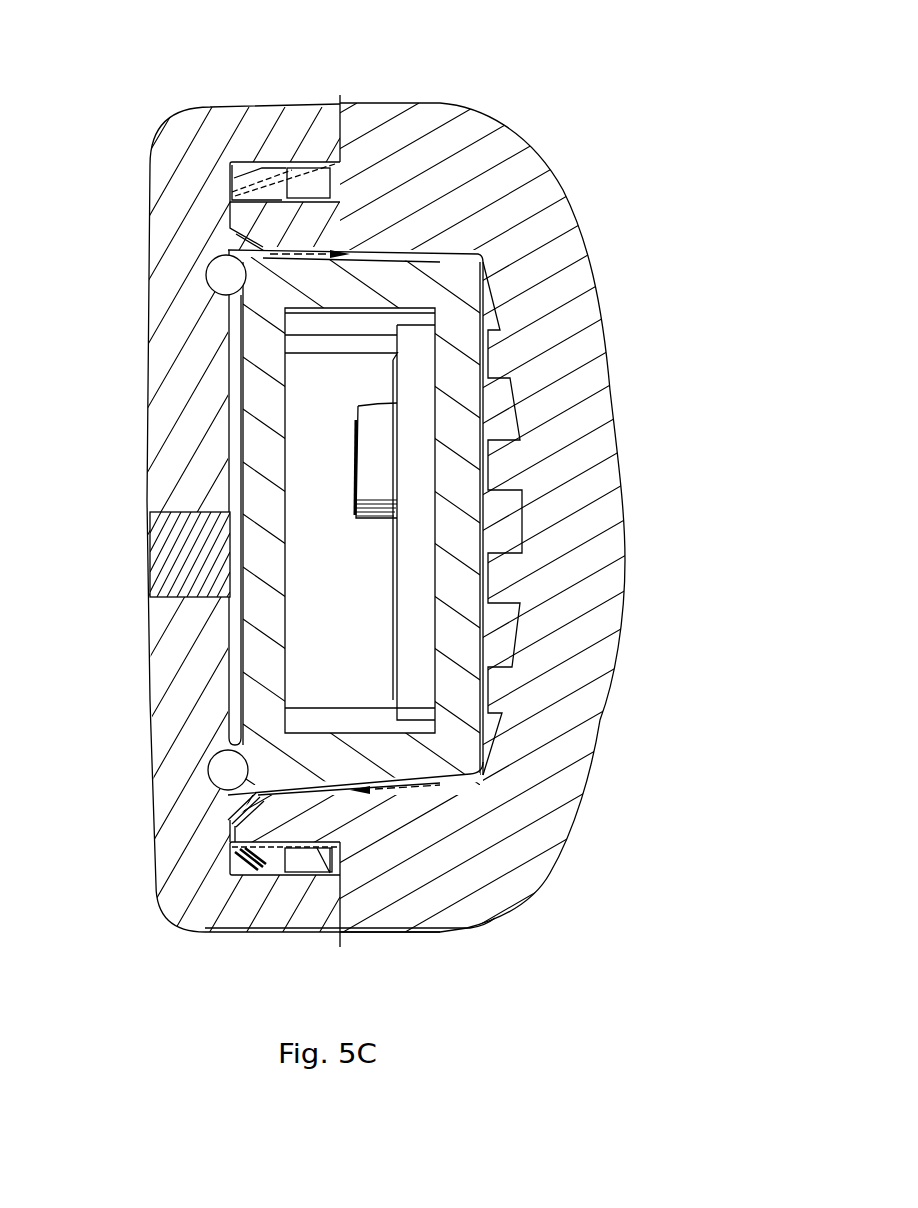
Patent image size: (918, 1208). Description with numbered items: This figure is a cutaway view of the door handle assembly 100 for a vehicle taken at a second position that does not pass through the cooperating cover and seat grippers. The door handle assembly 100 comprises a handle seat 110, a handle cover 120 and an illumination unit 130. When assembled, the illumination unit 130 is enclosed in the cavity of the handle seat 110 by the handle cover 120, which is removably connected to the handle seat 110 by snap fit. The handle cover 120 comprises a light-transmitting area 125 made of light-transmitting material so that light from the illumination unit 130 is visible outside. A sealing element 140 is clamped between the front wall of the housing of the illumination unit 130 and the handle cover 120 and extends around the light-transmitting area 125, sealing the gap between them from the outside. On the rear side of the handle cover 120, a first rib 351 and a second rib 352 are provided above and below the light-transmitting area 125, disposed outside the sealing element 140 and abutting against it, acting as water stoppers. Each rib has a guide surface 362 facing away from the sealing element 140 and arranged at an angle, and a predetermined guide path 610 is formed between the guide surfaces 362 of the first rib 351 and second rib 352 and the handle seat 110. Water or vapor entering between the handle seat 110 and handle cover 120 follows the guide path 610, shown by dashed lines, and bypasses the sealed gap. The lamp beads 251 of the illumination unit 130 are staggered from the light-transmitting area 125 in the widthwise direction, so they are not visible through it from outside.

The door handle assembly 100 is at (678, 127).
The handle seat 110 is at (523, 157).
The handle cover 120 is at (263, 118).
The light-transmitting area 125 is at (172, 565).
The illumination unit 130 is at (250, 387).
The sealing element 140 is at (240, 277).
The lamp beads 251 is at (385, 440).
The first rib 351 is at (243, 220).
The second rib 352 is at (242, 797).
The guide surface 362 is at (228, 858).
The guide path 610 is at (244, 828).